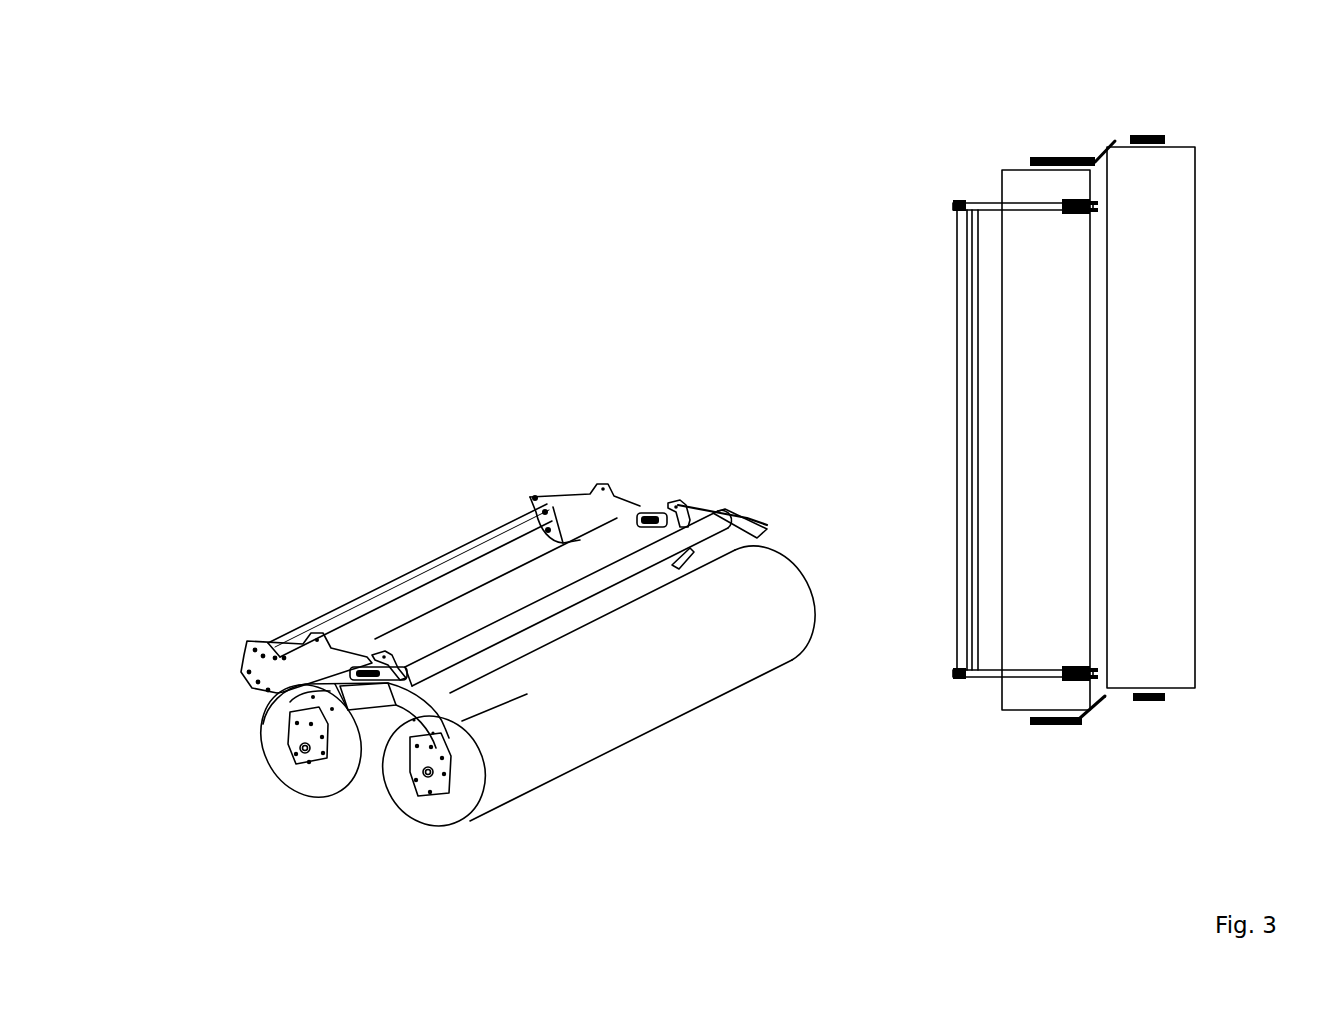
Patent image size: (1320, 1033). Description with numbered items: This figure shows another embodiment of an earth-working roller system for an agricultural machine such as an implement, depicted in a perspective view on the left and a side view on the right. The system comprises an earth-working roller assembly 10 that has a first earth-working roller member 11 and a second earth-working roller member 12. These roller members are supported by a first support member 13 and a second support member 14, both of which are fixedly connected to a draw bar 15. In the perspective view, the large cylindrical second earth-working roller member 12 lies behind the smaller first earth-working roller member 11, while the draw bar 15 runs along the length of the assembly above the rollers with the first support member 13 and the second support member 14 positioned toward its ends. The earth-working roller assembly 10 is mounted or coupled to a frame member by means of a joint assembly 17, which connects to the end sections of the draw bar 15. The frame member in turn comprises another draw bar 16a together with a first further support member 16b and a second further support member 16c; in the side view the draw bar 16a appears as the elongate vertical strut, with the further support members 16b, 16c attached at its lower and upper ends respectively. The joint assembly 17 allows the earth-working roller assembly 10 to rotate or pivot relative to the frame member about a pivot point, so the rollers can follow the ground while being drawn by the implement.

The earth-working roller assembly 10 is at (729, 530).
The first earth-working roller member 11 is at (278, 745).
The second earth-working roller member 12 is at (600, 710).
The first support member 13 is at (373, 700).
The second support member 14 is at (766, 545).
The draw bar 15 is at (489, 638).
The another draw bar 16a is at (972, 282).
The first further support member 16b is at (992, 676).
The second further support member 16c is at (1018, 203).
The joint assembly 17 is at (367, 668).